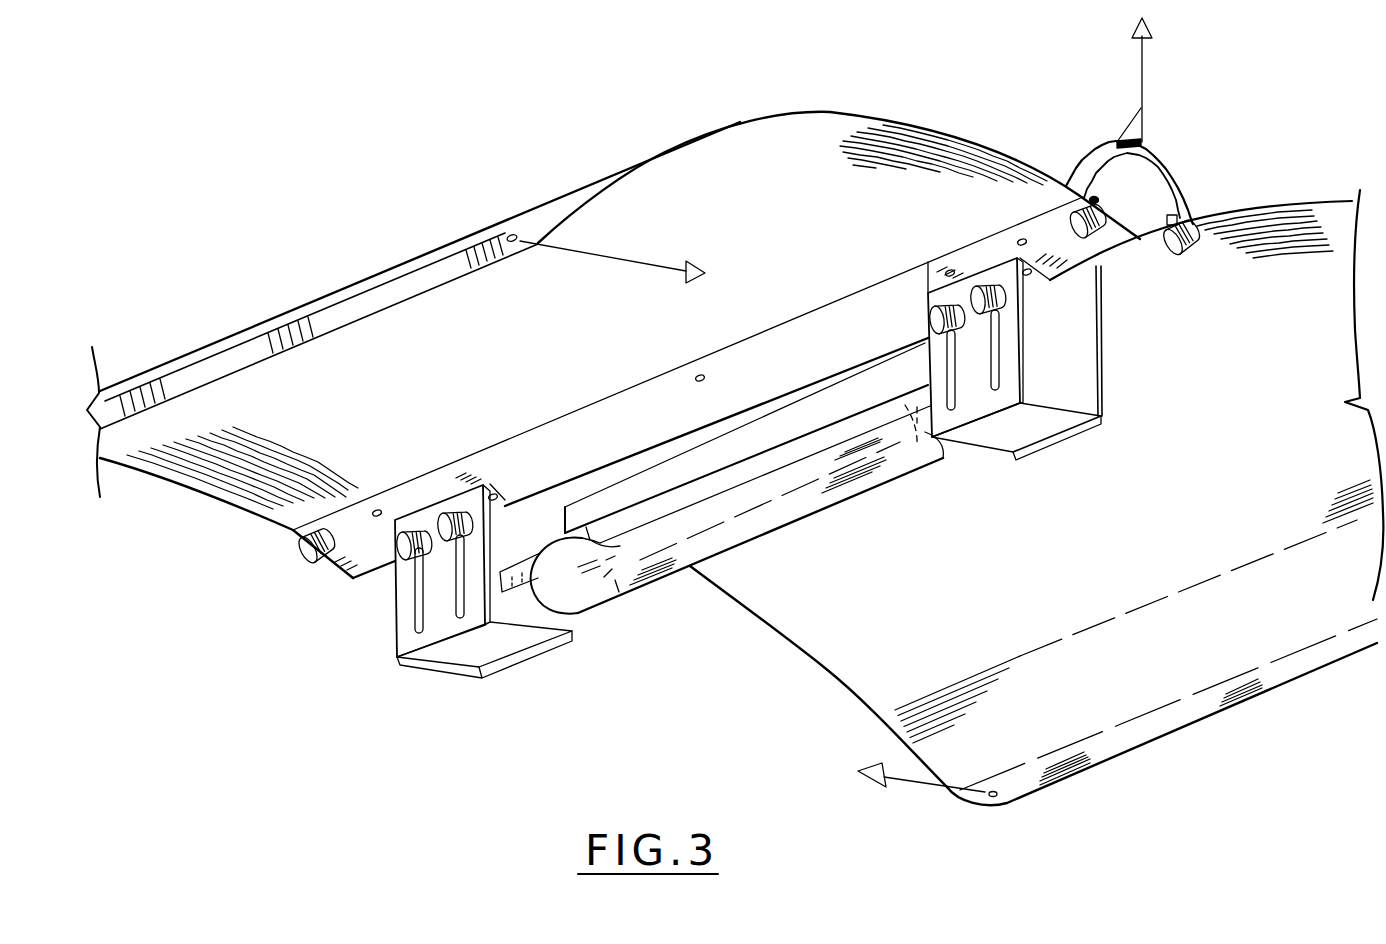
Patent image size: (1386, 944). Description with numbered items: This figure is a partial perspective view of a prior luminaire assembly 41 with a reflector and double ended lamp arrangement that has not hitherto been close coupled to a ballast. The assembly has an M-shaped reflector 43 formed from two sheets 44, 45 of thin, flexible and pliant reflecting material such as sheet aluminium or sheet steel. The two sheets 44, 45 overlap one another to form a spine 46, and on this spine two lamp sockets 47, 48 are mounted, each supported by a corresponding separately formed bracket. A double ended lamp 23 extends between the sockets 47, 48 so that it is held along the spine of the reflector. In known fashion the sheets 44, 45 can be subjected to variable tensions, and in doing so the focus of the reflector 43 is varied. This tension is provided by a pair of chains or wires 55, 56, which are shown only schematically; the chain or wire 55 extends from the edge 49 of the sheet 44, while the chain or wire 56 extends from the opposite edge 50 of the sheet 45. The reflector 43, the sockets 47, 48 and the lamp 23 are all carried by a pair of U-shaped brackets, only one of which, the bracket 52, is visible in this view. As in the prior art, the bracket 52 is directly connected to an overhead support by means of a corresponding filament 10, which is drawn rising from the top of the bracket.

The filament 10 is at (1142, 70).
The double ended lamp 23 is at (818, 498).
The luminaire assembly 41 is at (296, 228).
The M-shaped reflector 43 is at (746, 118).
The sheet 44 is at (562, 212).
The sheet 45 is at (1255, 205).
The spine 46 is at (860, 307).
The lamp socket 47 is at (470, 650).
The lamp socket 48 is at (1085, 382).
The edge 49 is at (225, 362).
The edge 50 is at (1203, 700).
The U-shaped bracket 52 is at (1158, 152).
The chain or wire 55 is at (600, 257).
The chain or wire 56 is at (886, 778).